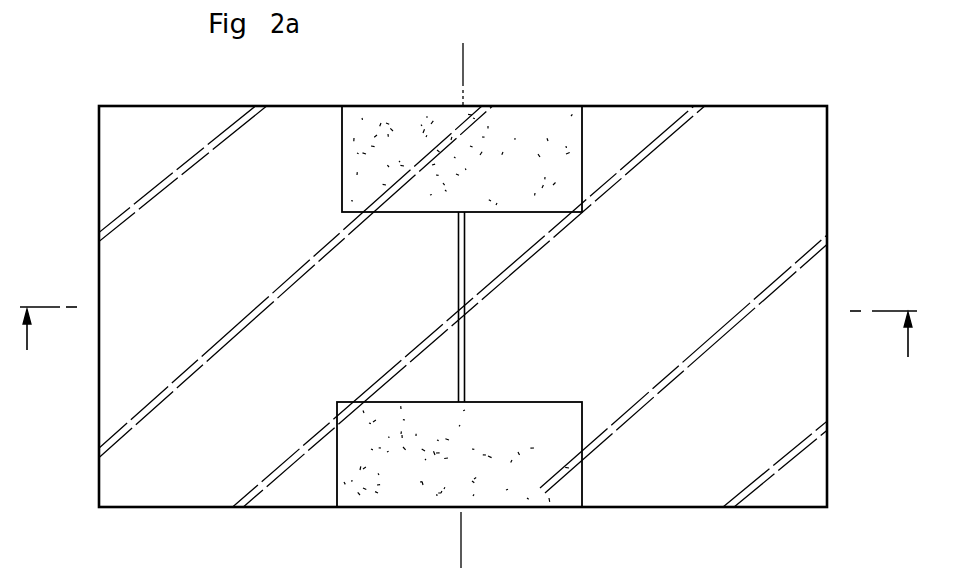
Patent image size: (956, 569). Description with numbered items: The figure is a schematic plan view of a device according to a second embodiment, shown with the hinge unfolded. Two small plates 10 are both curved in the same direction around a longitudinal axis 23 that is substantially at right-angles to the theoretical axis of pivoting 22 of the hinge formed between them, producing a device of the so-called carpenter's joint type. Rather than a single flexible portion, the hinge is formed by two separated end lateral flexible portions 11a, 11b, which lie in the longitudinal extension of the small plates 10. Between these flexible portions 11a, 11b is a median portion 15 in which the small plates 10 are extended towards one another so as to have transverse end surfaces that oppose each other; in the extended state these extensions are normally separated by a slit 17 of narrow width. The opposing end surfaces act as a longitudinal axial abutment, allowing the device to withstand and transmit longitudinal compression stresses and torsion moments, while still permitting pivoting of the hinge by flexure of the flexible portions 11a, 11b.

The small plates 10 is at (206, 215).
The end lateral flexible portion 11a is at (512, 137).
The end lateral flexible portion 11b is at (410, 478).
The median portion 15 is at (384, 323).
The slit 17 is at (462, 306).
The theoretical axis of pivoting 22 is at (463, 72).
The longitudinal axis 23 is at (44, 306).